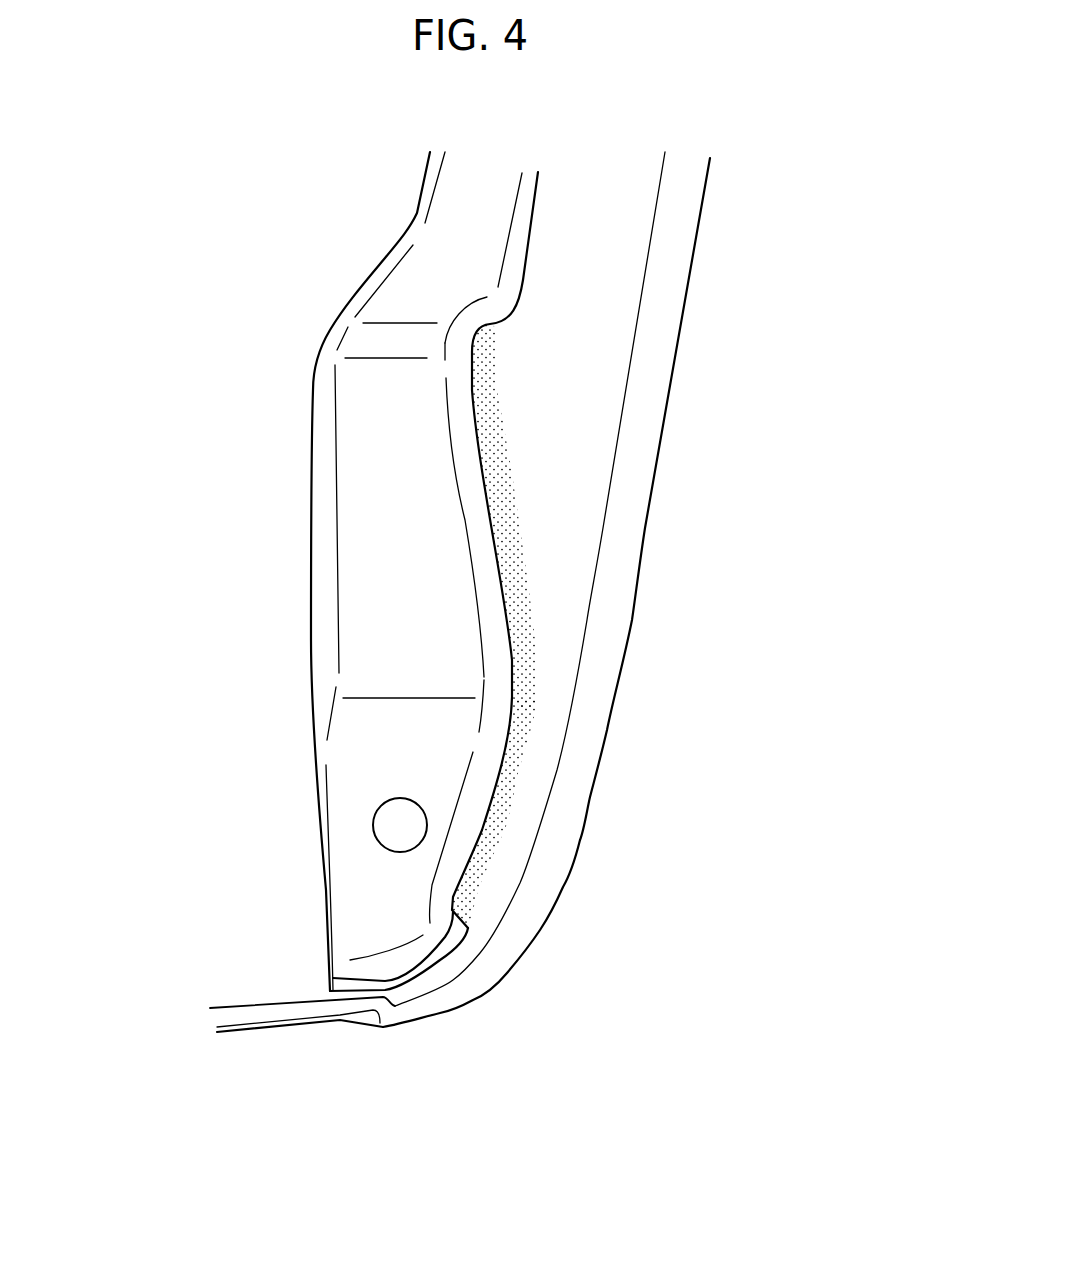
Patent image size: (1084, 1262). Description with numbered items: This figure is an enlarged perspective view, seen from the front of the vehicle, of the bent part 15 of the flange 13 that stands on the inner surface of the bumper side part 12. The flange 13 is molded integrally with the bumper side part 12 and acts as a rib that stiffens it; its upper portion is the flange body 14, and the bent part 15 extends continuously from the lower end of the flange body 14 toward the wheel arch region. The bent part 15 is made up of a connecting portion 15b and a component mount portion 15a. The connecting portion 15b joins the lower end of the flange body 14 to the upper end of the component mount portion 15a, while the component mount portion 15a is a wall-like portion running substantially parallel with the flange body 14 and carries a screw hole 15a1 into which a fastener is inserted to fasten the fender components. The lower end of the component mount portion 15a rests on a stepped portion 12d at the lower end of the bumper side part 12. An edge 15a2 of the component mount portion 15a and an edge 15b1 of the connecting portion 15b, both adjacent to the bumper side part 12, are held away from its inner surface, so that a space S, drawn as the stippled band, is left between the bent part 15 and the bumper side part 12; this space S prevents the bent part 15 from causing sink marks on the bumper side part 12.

The bumper side part 12 is at (665, 295).
The stepped portion 12d is at (307, 1010).
The flange 13 is at (344, 271).
The flange body 14 is at (453, 210).
The bent part 15 is at (439, 635).
The component mount portion 15a is at (441, 796).
The screw hole 15a1 is at (388, 845).
The edge of the component mount portion 15a2 is at (500, 767).
The connecting portion 15b is at (465, 494).
The edge of the connecting portion 15b1 is at (492, 475).
The space S is at (527, 653).